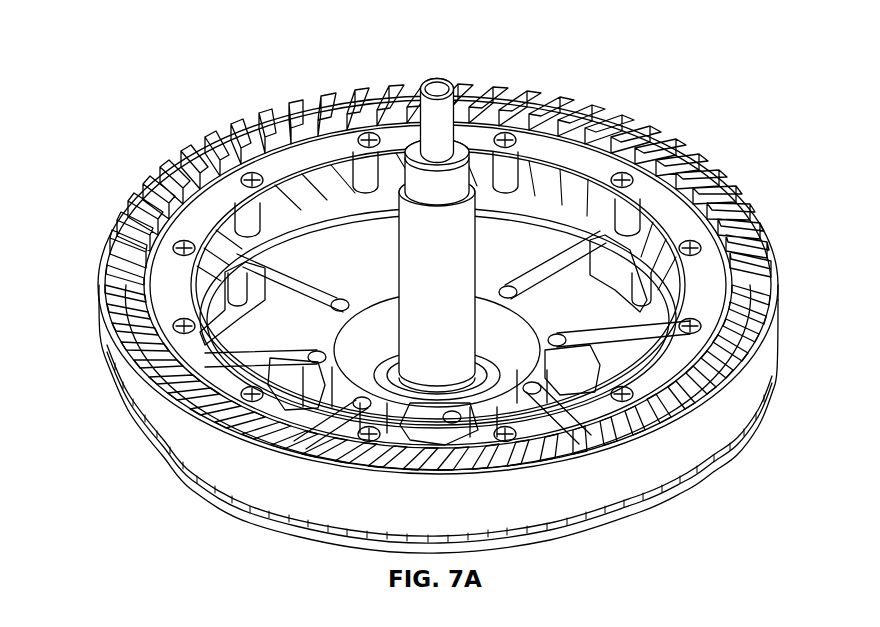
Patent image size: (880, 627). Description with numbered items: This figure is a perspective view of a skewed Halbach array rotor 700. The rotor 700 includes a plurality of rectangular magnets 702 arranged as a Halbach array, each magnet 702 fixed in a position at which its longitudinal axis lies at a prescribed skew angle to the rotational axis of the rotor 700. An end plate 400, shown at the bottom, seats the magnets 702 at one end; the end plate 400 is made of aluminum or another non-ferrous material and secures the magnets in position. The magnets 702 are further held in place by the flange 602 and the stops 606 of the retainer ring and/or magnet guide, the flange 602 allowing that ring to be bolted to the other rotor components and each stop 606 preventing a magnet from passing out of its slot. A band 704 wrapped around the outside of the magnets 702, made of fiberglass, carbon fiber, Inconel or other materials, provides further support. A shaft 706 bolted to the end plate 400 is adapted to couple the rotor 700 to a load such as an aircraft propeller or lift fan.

The skewed Halbach array rotor 700 is at (145, 121).
The end plate 400 is at (190, 493).
The flange 602 is at (662, 368).
The stop 606 is at (685, 155).
The rectangular magnet 702 is at (441, 470).
The band 704 is at (630, 487).
The shaft 706 is at (393, 277).